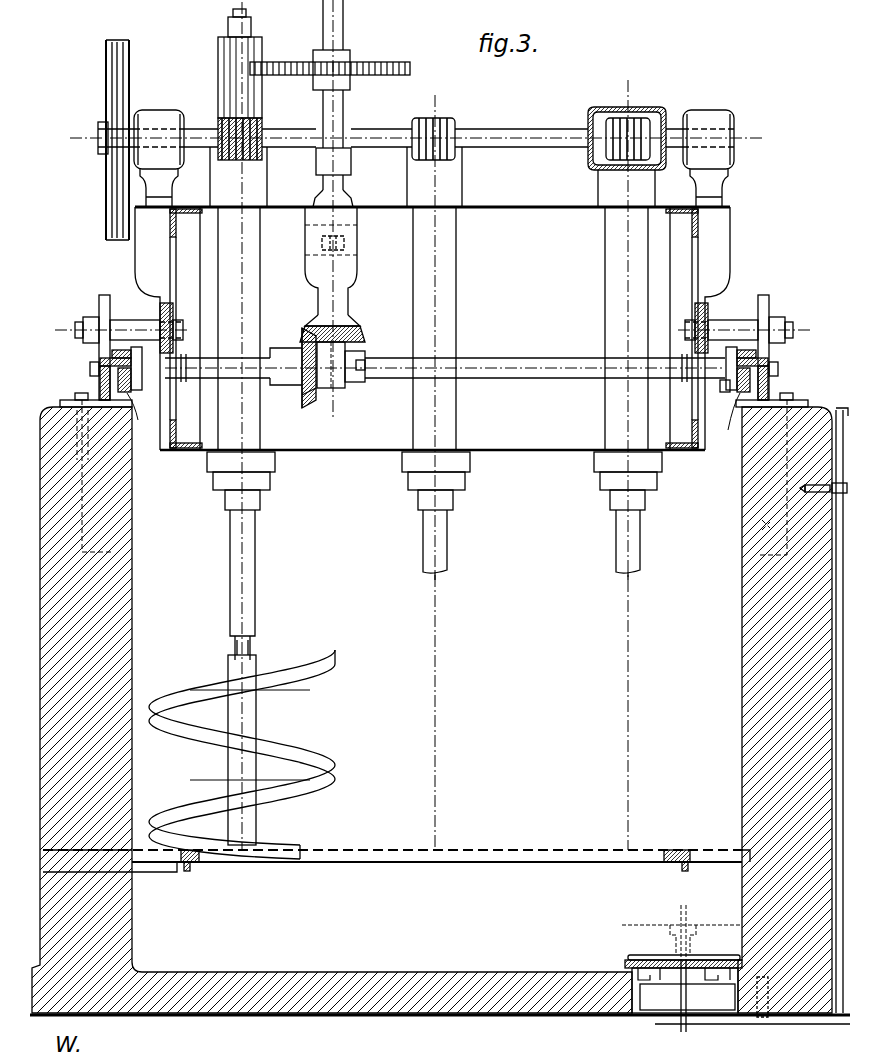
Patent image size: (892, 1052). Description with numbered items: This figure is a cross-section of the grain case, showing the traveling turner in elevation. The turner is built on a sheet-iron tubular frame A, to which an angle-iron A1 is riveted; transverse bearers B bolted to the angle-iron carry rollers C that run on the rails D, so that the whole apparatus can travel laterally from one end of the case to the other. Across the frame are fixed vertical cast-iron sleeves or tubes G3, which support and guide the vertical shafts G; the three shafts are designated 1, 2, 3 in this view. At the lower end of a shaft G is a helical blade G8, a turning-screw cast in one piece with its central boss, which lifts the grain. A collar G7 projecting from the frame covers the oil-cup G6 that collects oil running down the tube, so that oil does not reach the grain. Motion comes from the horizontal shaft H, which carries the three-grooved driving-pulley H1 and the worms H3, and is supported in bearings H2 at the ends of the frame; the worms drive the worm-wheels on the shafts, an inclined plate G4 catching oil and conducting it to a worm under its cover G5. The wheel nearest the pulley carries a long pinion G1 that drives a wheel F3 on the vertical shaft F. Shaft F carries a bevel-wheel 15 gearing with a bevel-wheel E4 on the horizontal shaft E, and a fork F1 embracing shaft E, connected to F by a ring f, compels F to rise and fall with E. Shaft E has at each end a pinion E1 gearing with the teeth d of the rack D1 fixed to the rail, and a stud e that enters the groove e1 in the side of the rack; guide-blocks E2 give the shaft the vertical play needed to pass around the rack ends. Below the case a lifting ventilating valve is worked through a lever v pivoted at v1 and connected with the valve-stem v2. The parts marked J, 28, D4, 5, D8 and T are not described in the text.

The worm-shaft H is at (417, 131).
The driving-pulley H1 is at (113, 129).
The bearings H2 is at (434, 127).
The bearing standards J is at (434, 188).
The long pinion G1 is at (241, 107).
The vertical shaft F is at (337, 210).
The ring f is at (344, 243).
The wheel F3 is at (330, 66).
The worm H3 is at (434, 472).
The worm cover G5 is at (627, 465).
The oil-catching plate G4 is at (626, 188).
The tubular frame A is at (432, 319).
The angle-iron A1 is at (434, 328).
The sleeve or tube G3 is at (435, 328).
The horizontal shaft E is at (445, 363).
The bevel-wheel E4 is at (300, 367).
The bevel gear teeth 28 is at (299, 406).
The fork F1 is at (341, 377).
The bevel-wheel 15 is at (342, 332).
The rack teeth d is at (433, 375).
The transverse bearer B is at (432, 322).
The roller C is at (432, 338).
The rail D is at (434, 380).
The rack D1 is at (434, 386).
The pinion E1 is at (434, 366).
The guide-block E2 is at (713, 386).
The stud or pin e is at (434, 347).
The upper groove or slot e1 is at (90, 369).
The tank D4 is at (440, 700).
The tank pipe connection 5 is at (801, 506).
The collar G7 is at (434, 471).
The oil-cup G6 is at (435, 500).
The vertical shaft G is at (435, 426).
The cord-winding index figure 1 is at (240, 631).
The cord-winding index figure 2 is at (439, 583).
The cord-winding index figure 3 is at (633, 583).
The helical blade G8 is at (242, 754).
The false bottom D8 is at (396, 851).
The lever v is at (735, 725).
The valve-stem v2 is at (688, 997).
The lever pivot v1 is at (760, 1010).
The outlet pipe T is at (752, 1036).